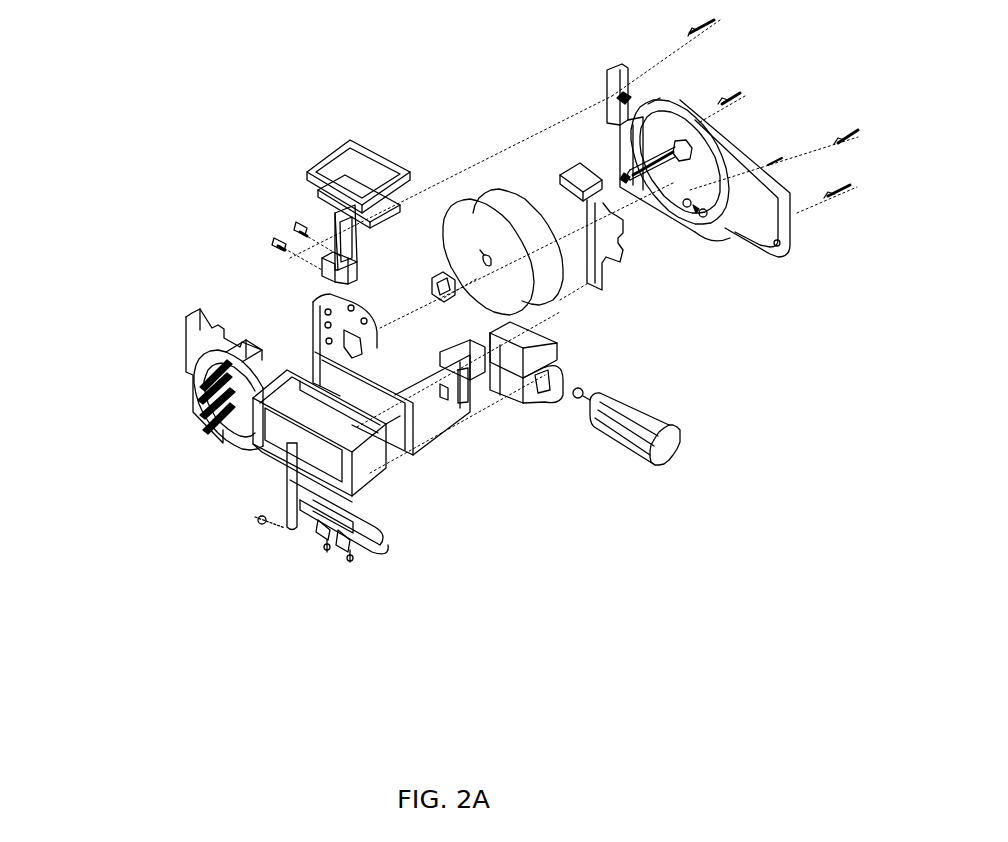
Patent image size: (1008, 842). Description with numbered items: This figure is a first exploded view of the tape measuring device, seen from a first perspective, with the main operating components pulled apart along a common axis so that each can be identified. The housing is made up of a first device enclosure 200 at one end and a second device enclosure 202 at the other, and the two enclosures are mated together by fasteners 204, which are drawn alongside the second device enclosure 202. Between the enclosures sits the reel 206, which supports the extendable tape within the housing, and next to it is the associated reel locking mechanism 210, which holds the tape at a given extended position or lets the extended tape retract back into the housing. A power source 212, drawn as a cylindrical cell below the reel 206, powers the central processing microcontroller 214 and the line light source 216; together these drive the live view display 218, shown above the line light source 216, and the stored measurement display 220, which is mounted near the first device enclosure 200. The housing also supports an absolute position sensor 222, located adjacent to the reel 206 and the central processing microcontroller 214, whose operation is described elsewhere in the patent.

The first device enclosure 200 is at (186, 352).
The second device enclosure 202 is at (660, 84).
The fasteners 204 is at (857, 142).
The reel 206 is at (528, 82).
The reel locking mechanism 210 is at (602, 257).
The power source 212 is at (612, 502).
The central processing microcontroller 214 is at (712, 727).
The line light source 216 is at (180, 82).
The live view display 218 is at (370, 47).
The stored measurement display 220 is at (100, 593).
The absolute position sensor 222 is at (42, 302).